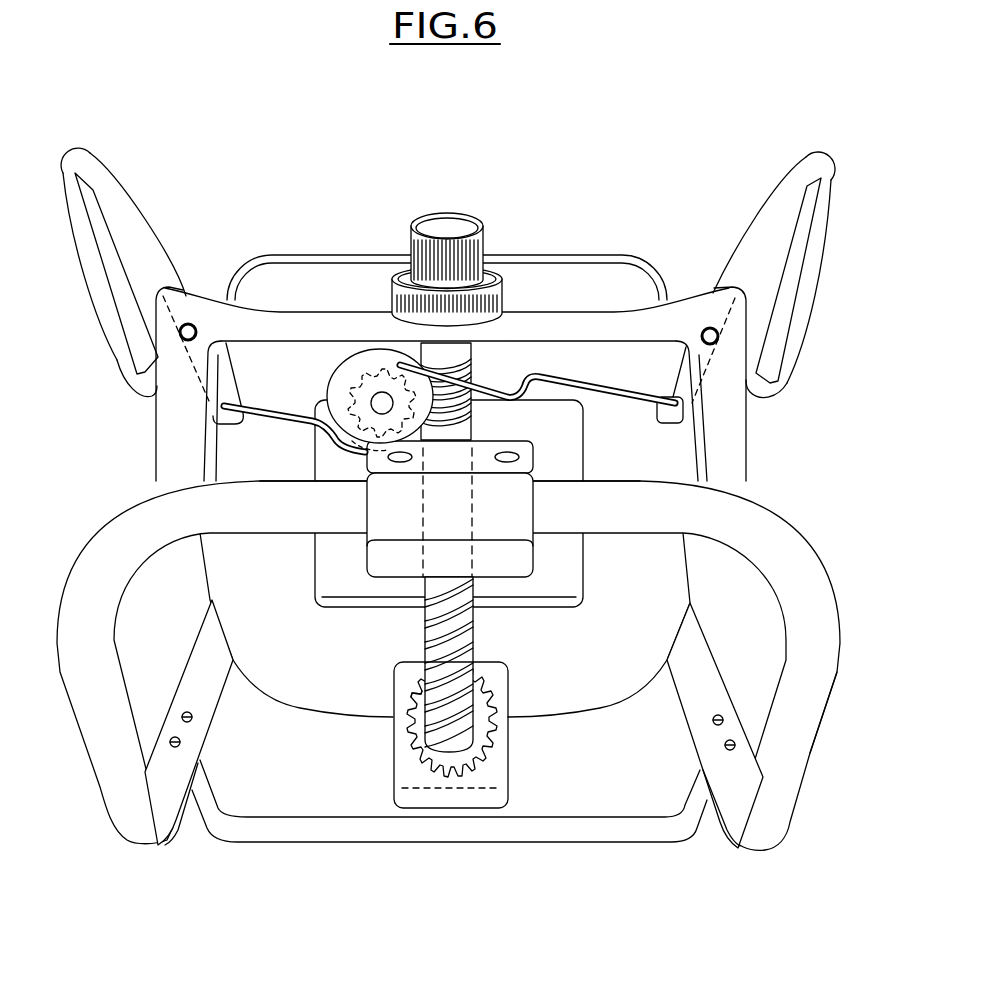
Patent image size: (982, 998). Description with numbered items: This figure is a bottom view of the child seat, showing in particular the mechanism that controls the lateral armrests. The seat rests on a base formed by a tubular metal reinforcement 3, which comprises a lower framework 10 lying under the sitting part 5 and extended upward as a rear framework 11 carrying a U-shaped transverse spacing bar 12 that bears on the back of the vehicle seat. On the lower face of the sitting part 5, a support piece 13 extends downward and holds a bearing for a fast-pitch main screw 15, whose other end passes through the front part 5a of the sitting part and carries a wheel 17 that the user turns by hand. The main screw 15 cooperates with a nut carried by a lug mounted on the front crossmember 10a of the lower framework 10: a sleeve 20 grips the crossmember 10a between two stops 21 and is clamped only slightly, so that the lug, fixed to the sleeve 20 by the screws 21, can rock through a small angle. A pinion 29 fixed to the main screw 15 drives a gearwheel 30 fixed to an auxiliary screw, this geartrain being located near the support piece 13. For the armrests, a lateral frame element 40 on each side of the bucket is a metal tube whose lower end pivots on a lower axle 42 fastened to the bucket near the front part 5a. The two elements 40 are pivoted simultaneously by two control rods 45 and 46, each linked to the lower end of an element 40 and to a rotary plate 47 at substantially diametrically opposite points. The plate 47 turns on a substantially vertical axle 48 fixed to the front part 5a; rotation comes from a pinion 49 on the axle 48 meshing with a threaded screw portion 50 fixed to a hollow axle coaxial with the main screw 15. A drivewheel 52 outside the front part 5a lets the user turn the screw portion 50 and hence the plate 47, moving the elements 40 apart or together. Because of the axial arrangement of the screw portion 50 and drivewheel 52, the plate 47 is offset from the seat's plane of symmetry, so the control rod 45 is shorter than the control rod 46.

The tubular metal reinforcement 3 is at (808, 788).
The sitting part 5 is at (628, 337).
The front part of the sitting part 5a is at (570, 380).
The lower framework 10 is at (118, 732).
The front crossmember 10a is at (605, 505).
The rear framework 11 is at (198, 685).
The transverse spacing bar 12 is at (332, 828).
The support piece 13 is at (490, 773).
The main screw 15 is at (455, 633).
The wheel 17 is at (462, 222).
The sleeve 20 is at (507, 520).
The stops (screws) 21 is at (365, 452).
The pinion 29 is at (445, 770).
The gearwheel 30 is at (423, 687).
The lateral frame element 40 is at (128, 174).
The lower axle 42 is at (178, 332).
The control rod 45 is at (278, 412).
The control rod 46 is at (610, 427).
The rotary plate 47 is at (352, 362).
The vertical axle 48 is at (381, 392).
The pinion 49 is at (370, 370).
The threaded screw portion 50 is at (447, 365).
The drivewheel 52 is at (517, 327).